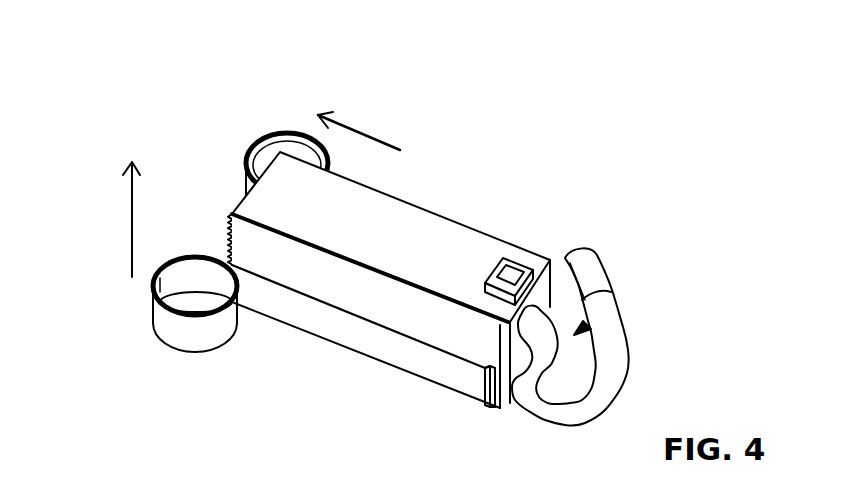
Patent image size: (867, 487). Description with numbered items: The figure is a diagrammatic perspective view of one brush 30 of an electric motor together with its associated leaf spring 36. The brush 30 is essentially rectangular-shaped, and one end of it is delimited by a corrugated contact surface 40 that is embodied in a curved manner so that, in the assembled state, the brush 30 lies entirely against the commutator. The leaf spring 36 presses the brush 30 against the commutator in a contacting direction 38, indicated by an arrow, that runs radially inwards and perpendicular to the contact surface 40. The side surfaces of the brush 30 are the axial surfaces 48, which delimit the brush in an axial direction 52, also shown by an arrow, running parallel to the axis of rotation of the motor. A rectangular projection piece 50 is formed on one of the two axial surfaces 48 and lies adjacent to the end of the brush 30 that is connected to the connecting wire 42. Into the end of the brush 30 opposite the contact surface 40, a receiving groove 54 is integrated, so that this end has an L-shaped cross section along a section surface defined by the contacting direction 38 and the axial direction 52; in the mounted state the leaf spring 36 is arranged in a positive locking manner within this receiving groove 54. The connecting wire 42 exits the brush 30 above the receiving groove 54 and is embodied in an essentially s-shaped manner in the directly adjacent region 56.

The brush 30 is at (437, 242).
The leaf spring 36 is at (288, 315).
The contacting direction 38 is at (364, 130).
The contact surface 40 is at (229, 236).
The connecting wire 42 is at (612, 336).
The axial surfaces 48 is at (505, 303).
The projection piece 50 is at (509, 283).
The axial direction 52 is at (127, 216).
The receiving groove 54 is at (485, 368).
The directly adjacent region 56 is at (586, 326).